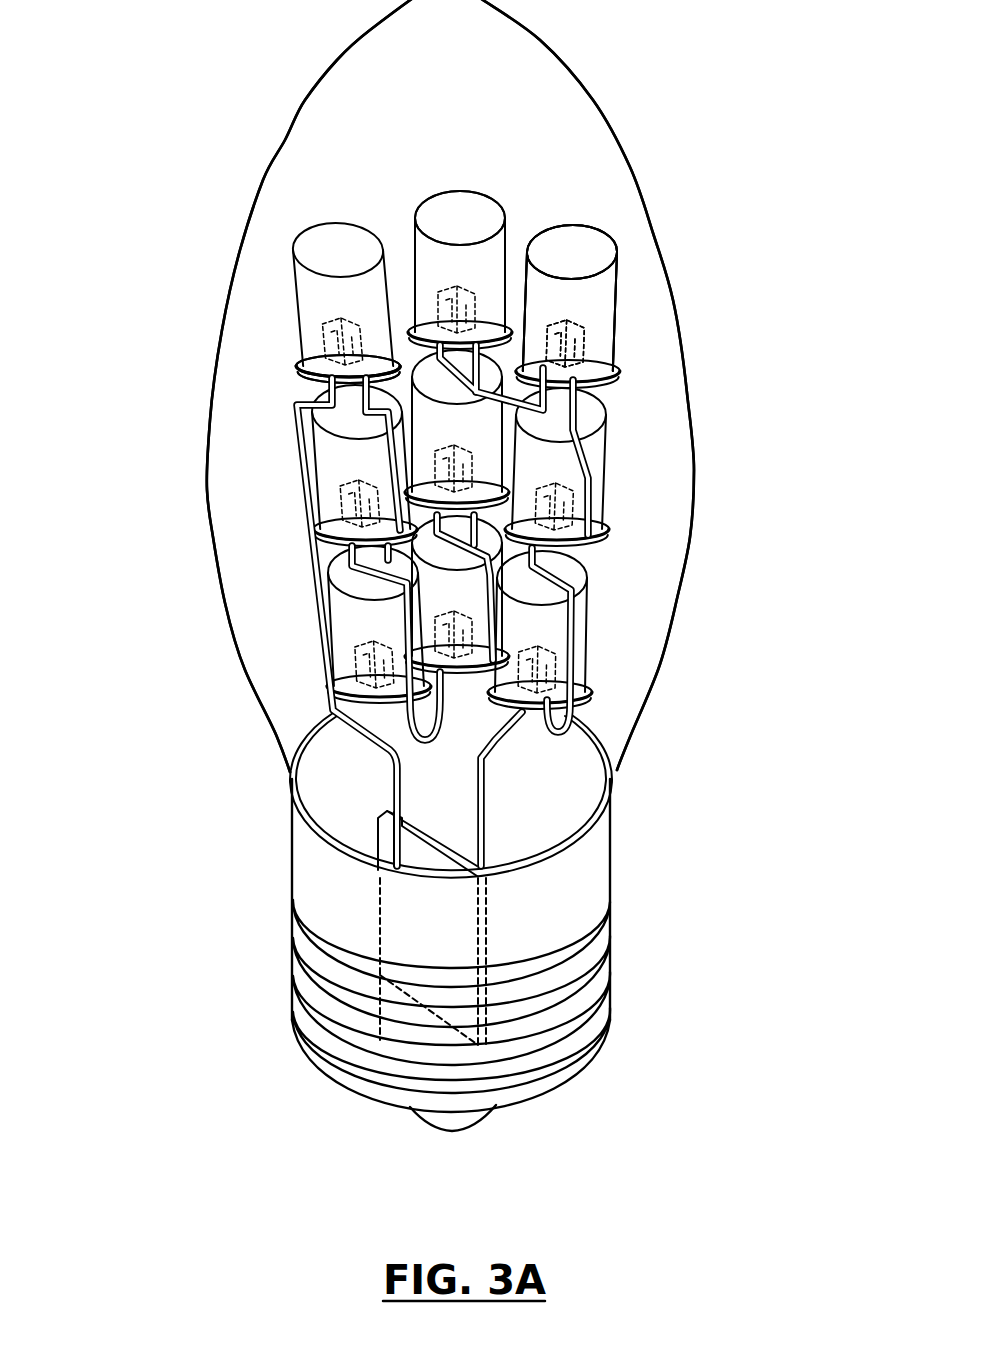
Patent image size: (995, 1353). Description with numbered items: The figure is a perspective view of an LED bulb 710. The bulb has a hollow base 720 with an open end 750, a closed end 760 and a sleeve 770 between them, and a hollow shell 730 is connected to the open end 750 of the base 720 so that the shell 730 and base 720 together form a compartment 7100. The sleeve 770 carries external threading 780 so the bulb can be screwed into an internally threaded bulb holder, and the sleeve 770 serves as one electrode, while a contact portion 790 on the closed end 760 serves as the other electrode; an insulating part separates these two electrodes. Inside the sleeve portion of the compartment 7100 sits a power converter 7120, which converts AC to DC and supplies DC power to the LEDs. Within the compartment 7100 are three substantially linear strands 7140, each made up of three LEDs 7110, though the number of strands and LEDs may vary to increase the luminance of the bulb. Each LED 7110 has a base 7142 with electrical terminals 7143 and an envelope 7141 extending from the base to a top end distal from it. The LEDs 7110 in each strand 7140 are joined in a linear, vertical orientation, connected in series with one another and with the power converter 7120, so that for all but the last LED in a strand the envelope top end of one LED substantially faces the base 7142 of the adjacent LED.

The LED bulb 710 is at (674, 198).
The compartment 7100 is at (625, 217).
The LED 7110 is at (618, 310).
The power converter 7120 is at (490, 926).
The strand of LEDs 7140 is at (453, 203).
The envelope 7141 is at (497, 287).
The base 7142 is at (302, 380).
The electrical terminals 7143 is at (585, 343).
The shell 730 is at (688, 473).
The open end 750 is at (620, 778).
The sleeve 770 is at (277, 1113).
The base 720 is at (608, 863).
The external threading 780 is at (608, 950).
The closed end 760 is at (608, 1010).
The contact portion 790 is at (458, 1128).